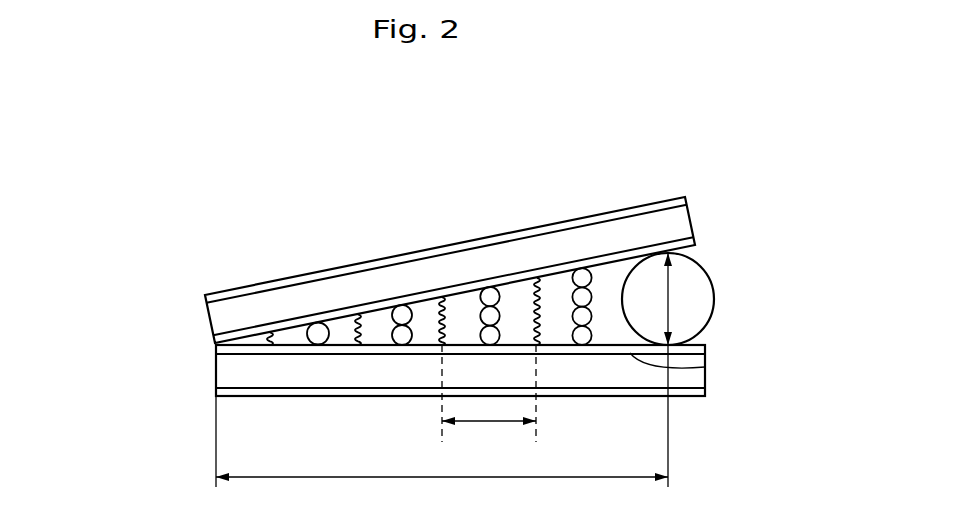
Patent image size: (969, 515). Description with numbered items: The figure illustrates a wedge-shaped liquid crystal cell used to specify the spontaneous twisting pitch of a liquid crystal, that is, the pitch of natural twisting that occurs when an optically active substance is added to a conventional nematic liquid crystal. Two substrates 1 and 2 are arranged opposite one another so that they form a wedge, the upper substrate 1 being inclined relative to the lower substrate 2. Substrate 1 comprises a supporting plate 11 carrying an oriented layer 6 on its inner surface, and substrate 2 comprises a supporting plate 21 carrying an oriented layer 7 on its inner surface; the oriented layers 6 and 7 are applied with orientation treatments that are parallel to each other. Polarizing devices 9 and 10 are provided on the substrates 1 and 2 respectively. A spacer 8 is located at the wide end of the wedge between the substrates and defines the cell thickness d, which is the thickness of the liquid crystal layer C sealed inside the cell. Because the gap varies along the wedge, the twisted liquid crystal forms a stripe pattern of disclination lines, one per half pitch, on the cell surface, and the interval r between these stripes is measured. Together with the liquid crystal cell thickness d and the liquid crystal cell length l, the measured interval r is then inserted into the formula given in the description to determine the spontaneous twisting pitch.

The substrate 1 is at (620, 207).
The substrate 2 is at (695, 408).
The oriented layer 6 is at (472, 289).
The oriented layer 7 is at (705, 365).
The spacer 8 is at (698, 310).
The polarizing device 9 is at (268, 282).
The polarizing device 10 is at (215, 395).
The supporting plate 11 is at (423, 275).
The supporting plate 21 is at (232, 367).
The liquid crystal layer C is at (596, 313).
The liquid crystal cell thickness d is at (668, 297).
The interval of the stripe pattern r is at (489, 397).
The liquid crystal cell length l is at (442, 455).